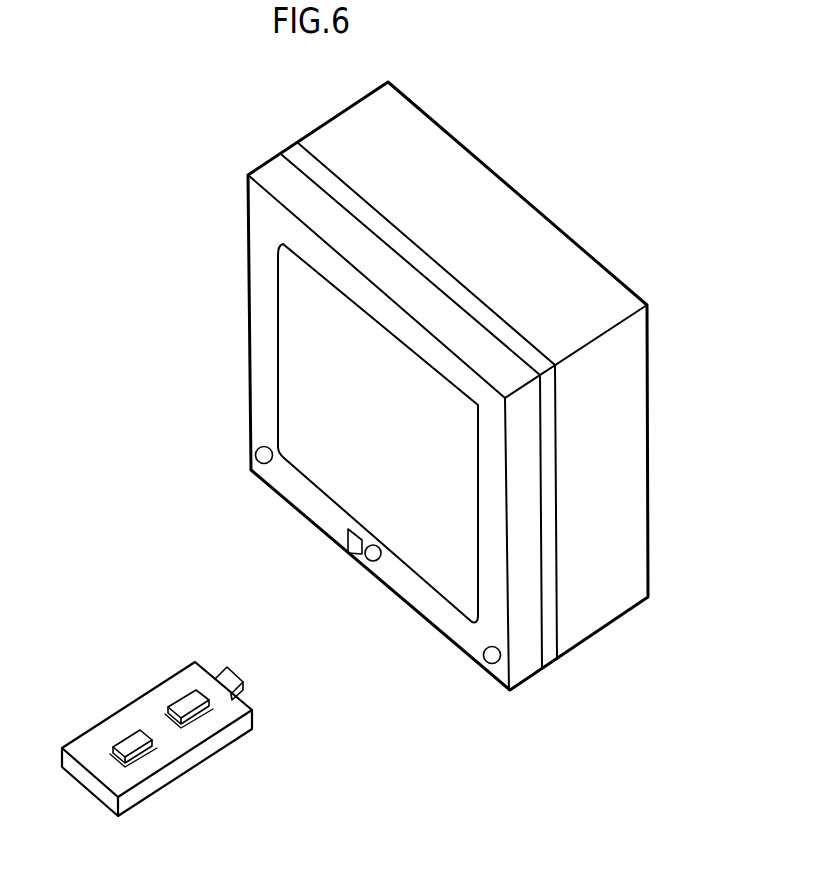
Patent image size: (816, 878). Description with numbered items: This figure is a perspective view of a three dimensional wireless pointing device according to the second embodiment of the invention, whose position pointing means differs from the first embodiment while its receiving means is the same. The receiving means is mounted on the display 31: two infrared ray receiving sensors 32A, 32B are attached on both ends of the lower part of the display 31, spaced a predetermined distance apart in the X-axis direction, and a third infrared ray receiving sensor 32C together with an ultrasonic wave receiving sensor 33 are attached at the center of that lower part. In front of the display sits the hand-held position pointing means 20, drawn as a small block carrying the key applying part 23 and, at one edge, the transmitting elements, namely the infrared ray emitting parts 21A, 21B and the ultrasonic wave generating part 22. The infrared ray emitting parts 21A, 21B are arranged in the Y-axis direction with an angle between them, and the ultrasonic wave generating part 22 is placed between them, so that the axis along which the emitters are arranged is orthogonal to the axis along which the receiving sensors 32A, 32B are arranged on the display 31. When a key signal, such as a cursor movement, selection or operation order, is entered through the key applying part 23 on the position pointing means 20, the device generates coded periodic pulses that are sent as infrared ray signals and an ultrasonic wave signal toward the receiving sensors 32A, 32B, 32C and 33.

The display 31 is at (648, 455).
The infrared ray receiving sensor 32A is at (266, 464).
The infrared ray receiving sensor 32B is at (486, 663).
The infrared ray receiving sensor 32C is at (373, 561).
The ultrasonic wave receiving sensor 33 is at (348, 553).
The position pointing means 20 is at (82, 741).
The infrared ray emitting part 21A is at (155, 629).
The infrared ray emitting part 21B is at (155, 629).
The ultrasonic wave generating part 22 is at (223, 673).
The key applying part 23 is at (128, 747).